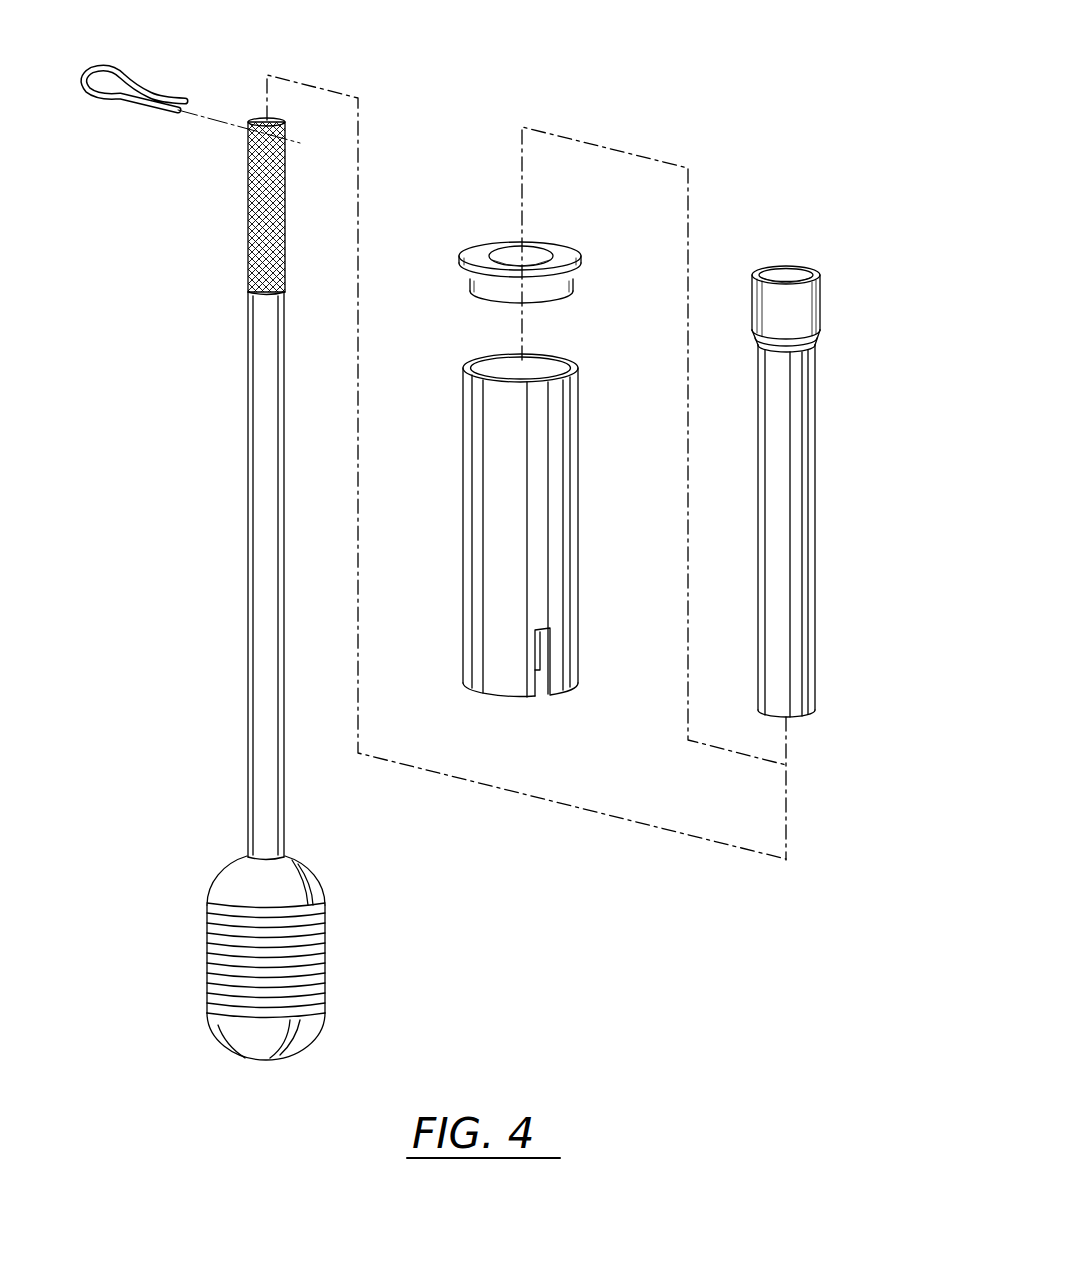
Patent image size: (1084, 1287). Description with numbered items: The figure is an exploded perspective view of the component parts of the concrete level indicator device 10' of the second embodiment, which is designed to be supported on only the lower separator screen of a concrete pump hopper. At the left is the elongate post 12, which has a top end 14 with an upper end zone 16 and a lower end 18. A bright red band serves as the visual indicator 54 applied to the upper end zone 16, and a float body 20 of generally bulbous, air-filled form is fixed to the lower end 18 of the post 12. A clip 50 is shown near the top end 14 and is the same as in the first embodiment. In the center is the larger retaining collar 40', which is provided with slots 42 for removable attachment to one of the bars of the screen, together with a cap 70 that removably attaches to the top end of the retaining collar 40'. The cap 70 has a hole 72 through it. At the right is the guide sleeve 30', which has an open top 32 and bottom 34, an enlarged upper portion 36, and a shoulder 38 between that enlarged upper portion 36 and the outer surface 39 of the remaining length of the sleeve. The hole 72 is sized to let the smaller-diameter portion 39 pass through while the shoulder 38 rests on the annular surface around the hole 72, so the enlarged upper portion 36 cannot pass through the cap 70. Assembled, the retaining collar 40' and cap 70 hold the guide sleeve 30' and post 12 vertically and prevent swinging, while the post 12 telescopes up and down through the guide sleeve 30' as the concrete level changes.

The concrete level indicator device 10' is at (450, 66).
The elongate post 12 is at (250, 438).
The top end 14 is at (263, 118).
The upper end zone 16 is at (278, 237).
The lower end 18 is at (283, 853).
The float body 20 is at (310, 890).
The guide sleeve 30' is at (840, 488).
The open top 32 is at (792, 272).
The bottom 34 is at (800, 718).
The enlarged upper portion 36 is at (800, 310).
The shoulder 38 is at (816, 336).
The outer surface 39 is at (813, 388).
The retaining collar 40' is at (479, 525).
The slots 42 is at (543, 645).
The clip 50 is at (130, 100).
The visual indicator 54 is at (268, 207).
The cap 70 is at (583, 213).
The hole 72 is at (512, 256).